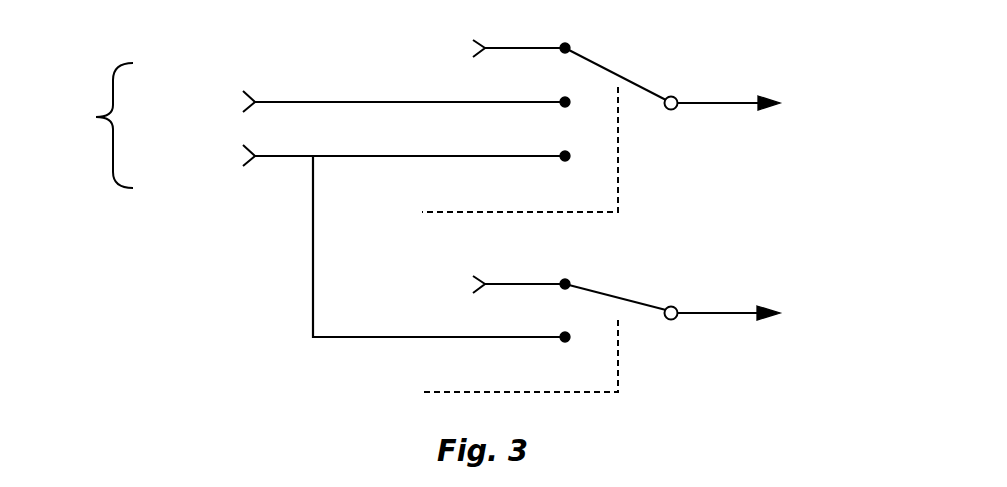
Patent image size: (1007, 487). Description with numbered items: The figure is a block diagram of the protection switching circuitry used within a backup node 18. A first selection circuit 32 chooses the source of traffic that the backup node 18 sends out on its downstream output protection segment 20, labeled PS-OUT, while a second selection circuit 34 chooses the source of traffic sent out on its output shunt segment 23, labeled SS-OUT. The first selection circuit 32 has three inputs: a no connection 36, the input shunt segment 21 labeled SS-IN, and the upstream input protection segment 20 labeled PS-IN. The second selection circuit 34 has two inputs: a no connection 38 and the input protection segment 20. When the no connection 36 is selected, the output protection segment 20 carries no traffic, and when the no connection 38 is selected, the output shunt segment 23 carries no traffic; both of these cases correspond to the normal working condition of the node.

The backup node 18 is at (147, 125).
The input shunt segment 21 is at (455, 102).
The protection segment 20 is at (493, 156).
The output shunt segment 23 is at (690, 313).
The first selection circuit 32 is at (641, 51).
The second selection circuit 34 is at (632, 275).
The no connection 36 is at (495, 48).
The no connection 38 is at (495, 284).